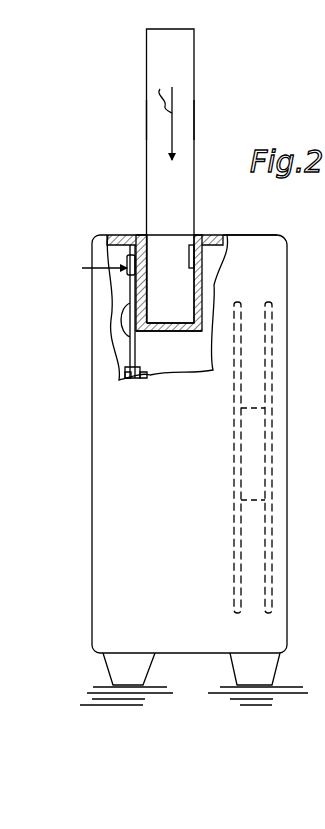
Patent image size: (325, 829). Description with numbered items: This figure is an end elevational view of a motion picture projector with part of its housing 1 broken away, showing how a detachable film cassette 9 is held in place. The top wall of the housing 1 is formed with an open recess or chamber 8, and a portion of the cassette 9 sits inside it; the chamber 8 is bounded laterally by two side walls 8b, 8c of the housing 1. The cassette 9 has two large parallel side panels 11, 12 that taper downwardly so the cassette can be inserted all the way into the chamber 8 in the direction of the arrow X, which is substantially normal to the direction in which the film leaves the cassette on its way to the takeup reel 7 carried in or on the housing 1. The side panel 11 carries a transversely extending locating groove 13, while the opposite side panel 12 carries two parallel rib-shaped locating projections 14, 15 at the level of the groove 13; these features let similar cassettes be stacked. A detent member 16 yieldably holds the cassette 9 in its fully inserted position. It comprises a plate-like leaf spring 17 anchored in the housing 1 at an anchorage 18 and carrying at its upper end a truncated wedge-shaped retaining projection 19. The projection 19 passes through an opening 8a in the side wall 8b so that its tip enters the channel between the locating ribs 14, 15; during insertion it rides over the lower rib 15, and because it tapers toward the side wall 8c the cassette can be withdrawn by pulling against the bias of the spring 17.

The housing 1 is at (90, 240).
The takeup reel 7 is at (257, 445).
The chamber 8 is at (143, 234).
The opening 8a is at (170, 308).
The side wall 8b is at (137, 337).
The side wall 8c is at (202, 268).
The cassette 9 is at (197, 83).
The side panel 11 is at (197, 130).
The side panel 12 is at (146, 127).
The locating groove 13 is at (197, 243).
The rib-shaped projection 14 is at (130, 250).
The rib-shaped projection 15 is at (130, 280).
The detent member 16 is at (94, 261).
The leaf spring 17 is at (147, 372).
The anchorage 18 is at (138, 372).
The retaining projection 19 is at (127, 255).